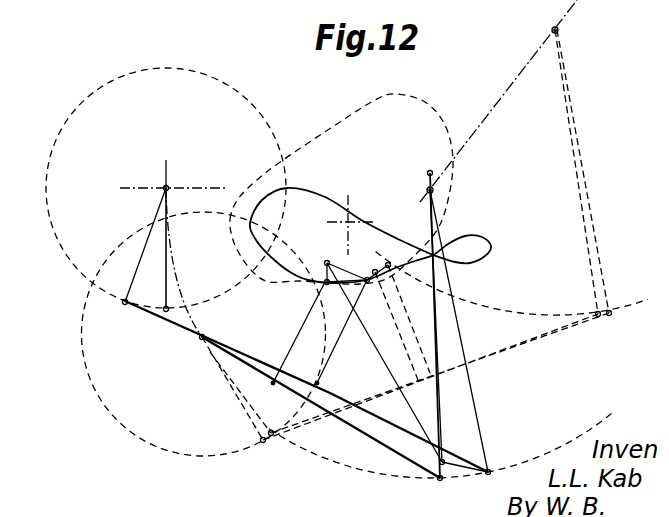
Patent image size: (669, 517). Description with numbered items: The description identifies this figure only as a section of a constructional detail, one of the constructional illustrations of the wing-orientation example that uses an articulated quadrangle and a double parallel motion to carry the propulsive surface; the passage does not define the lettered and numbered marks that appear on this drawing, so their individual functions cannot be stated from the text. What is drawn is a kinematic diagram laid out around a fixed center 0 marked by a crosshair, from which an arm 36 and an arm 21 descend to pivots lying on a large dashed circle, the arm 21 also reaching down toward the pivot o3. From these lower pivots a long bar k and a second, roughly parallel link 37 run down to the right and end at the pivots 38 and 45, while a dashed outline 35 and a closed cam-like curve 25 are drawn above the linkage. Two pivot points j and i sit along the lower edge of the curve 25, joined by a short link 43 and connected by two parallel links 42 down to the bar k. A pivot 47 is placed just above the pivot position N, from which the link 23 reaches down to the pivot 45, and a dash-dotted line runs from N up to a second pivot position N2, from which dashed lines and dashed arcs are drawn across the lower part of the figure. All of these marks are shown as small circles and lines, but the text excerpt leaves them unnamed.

The fixed pivot center 0 is at (166, 188).
The arm 36 is at (150, 236).
The arm 21 is at (185, 274).
The pivot o3 is at (200, 341).
The bar k is at (254, 357).
The slot path 35 is at (340, 119).
The cam 25 is at (491, 246).
The pivot point j is at (327, 263).
The pivot point i is at (367, 283).
The link 42 is at (322, 285).
The link 43 is at (343, 277).
The pivot 47 is at (430, 170).
The pivot position N is at (430, 190).
The pivot position N2 is at (555, 30).
The link 23 is at (476, 398).
The link 37 is at (353, 428).
The pivot 38 is at (438, 480).
The pivot 45 is at (444, 466).